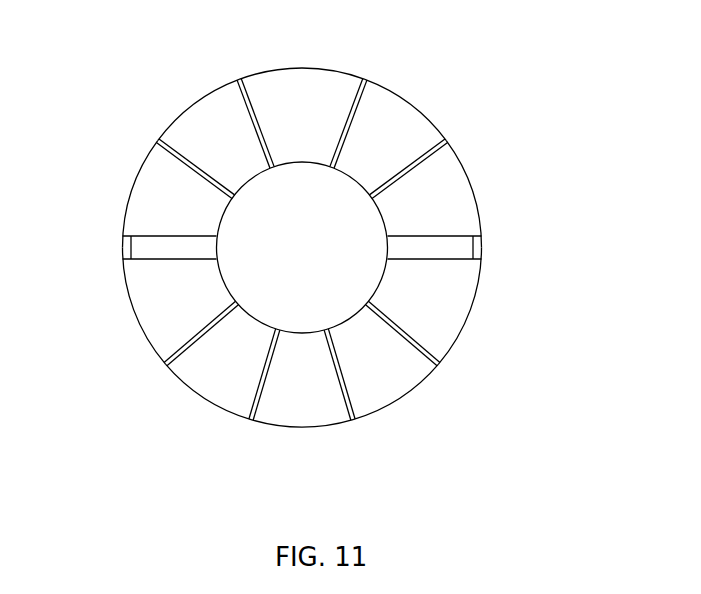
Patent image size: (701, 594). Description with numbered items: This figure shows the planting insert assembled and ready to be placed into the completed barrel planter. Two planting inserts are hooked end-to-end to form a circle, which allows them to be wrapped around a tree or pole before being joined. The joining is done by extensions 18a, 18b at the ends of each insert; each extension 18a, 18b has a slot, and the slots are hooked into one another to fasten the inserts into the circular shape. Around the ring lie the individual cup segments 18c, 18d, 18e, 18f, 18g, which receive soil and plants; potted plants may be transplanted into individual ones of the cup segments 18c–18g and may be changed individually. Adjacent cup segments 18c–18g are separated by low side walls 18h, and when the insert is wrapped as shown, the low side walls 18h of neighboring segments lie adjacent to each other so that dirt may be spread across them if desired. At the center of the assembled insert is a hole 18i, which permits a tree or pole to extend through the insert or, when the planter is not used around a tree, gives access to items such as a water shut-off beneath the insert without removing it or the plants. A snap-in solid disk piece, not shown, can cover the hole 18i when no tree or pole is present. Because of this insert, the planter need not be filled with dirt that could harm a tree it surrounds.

The extension 18a is at (127, 256).
The extension 18b is at (126, 241).
The cup segment 18c is at (152, 170).
The cup segment 18d is at (224, 100).
The cup segment 18e is at (301, 77).
The cup segment 18f is at (398, 97).
The cup segment 18g is at (463, 200).
The low side wall 18h is at (437, 131).
The hole 18i is at (318, 260).